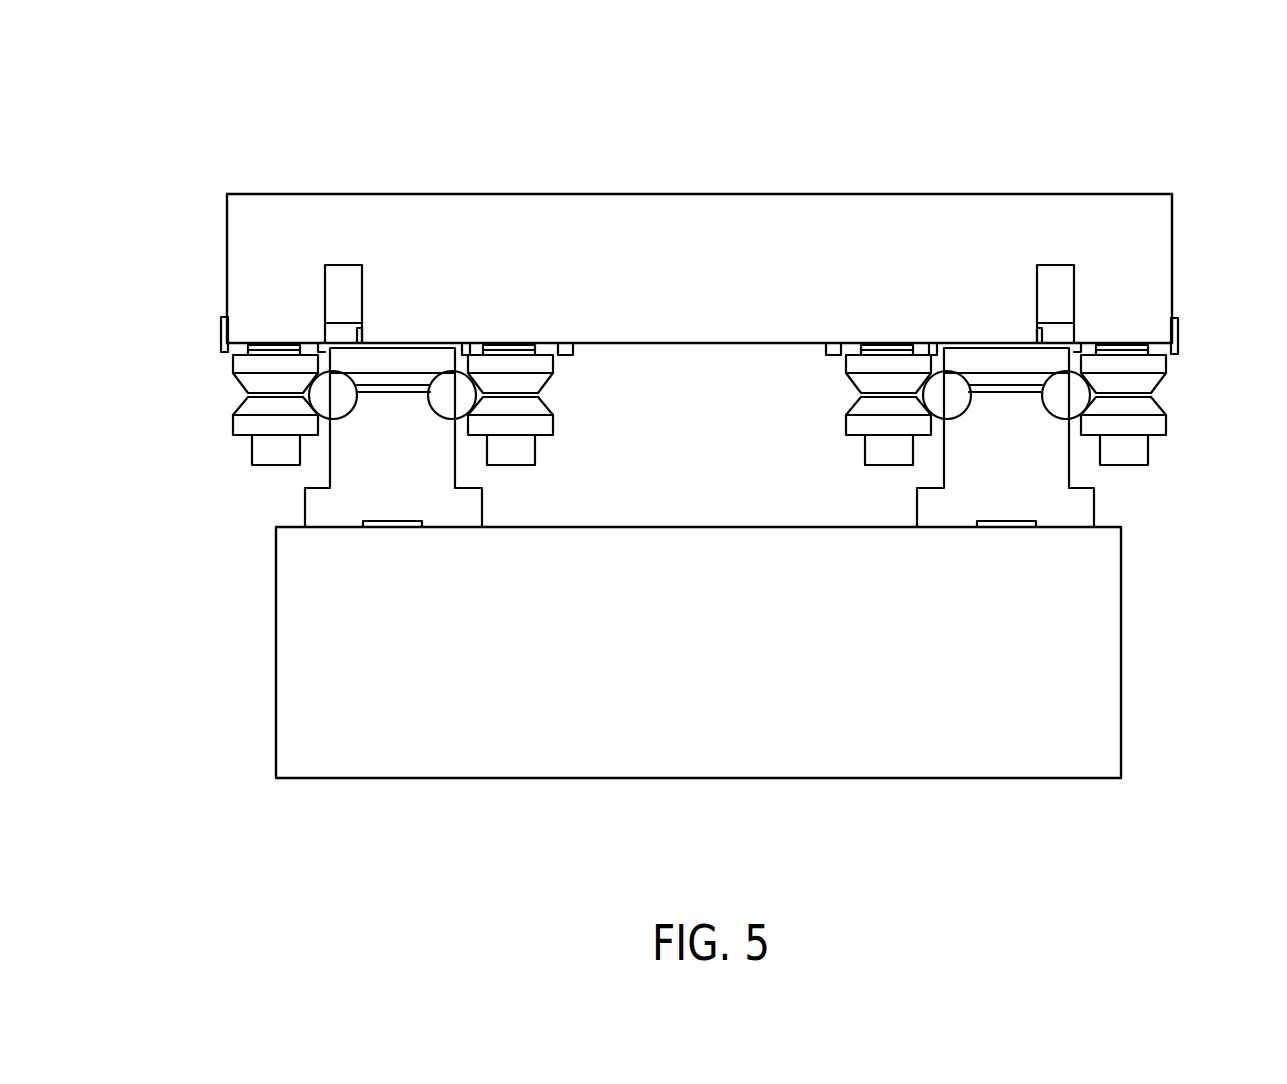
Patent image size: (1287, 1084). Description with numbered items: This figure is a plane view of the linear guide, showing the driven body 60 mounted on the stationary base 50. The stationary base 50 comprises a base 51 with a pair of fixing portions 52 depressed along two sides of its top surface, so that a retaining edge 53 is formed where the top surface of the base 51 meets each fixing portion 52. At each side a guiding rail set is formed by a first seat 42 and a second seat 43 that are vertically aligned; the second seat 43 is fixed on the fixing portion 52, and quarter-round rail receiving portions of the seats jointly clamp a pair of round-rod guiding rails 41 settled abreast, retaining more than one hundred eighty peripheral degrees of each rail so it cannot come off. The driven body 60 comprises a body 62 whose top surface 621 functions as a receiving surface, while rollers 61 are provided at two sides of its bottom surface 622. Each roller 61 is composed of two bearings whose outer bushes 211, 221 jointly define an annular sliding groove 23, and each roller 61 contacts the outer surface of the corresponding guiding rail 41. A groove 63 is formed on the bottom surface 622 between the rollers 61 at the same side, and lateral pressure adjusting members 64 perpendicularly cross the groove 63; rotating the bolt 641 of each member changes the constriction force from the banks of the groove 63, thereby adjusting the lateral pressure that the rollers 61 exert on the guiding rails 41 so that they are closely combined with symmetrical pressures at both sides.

The driven body 60 is at (693, 238).
The body 62 is at (699, 273).
The top surface 621 is at (790, 196).
The bottom surface 622 is at (688, 340).
The groove 63 is at (699, 240).
The bolt 641 is at (345, 330).
The lateral pressure adjusting member 64 is at (222, 330).
The roller 61 is at (700, 452).
The outer bush 211 is at (236, 363).
The annular sliding groove 23 is at (248, 395).
The outer bush 221 is at (240, 425).
The first seat 42 is at (699, 445).
The guiding rail 41 is at (347, 403).
The second seat 43 is at (390, 505).
The fixing portion 52 is at (328, 530).
The retaining edge 53 is at (485, 528).
The stationary base 50 is at (761, 652).
The base 51 is at (1102, 707).